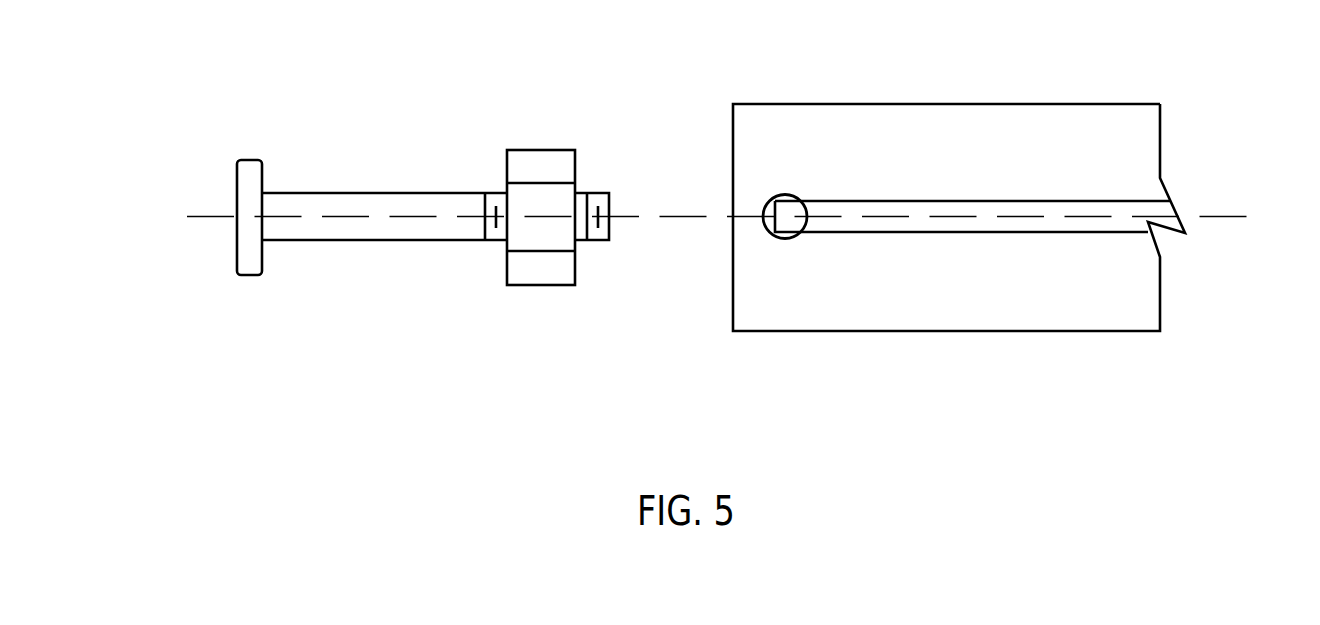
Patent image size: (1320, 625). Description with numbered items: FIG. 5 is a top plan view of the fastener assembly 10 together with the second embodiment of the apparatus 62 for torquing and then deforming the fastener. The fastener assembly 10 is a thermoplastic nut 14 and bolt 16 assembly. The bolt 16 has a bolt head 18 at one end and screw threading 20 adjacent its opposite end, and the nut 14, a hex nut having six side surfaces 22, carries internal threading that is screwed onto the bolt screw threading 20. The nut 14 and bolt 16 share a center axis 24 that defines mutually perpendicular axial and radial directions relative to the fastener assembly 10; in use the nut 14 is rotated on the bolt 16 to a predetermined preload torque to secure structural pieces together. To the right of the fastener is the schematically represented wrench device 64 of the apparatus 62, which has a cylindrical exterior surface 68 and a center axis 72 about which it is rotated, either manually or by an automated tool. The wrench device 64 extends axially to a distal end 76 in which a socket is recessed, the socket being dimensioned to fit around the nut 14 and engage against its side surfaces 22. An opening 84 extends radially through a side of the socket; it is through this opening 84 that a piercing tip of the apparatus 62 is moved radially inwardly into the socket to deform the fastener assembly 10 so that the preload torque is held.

The fastener assembly 10 is at (382, 136).
The nut 14 is at (542, 267).
The bolt 16 is at (385, 228).
The bolt head 18 is at (247, 229).
The screw threading 20 is at (598, 195).
The side surfaces 22 is at (540, 157).
The center axis 24 is at (204, 216).
The apparatus 62 is at (1057, 80).
The wrench device 64 is at (948, 120).
The cylindrical exterior surface 68 is at (914, 332).
The center axis 72 is at (1220, 216).
The distal end 76 is at (733, 122).
The opening 84 is at (763, 191).